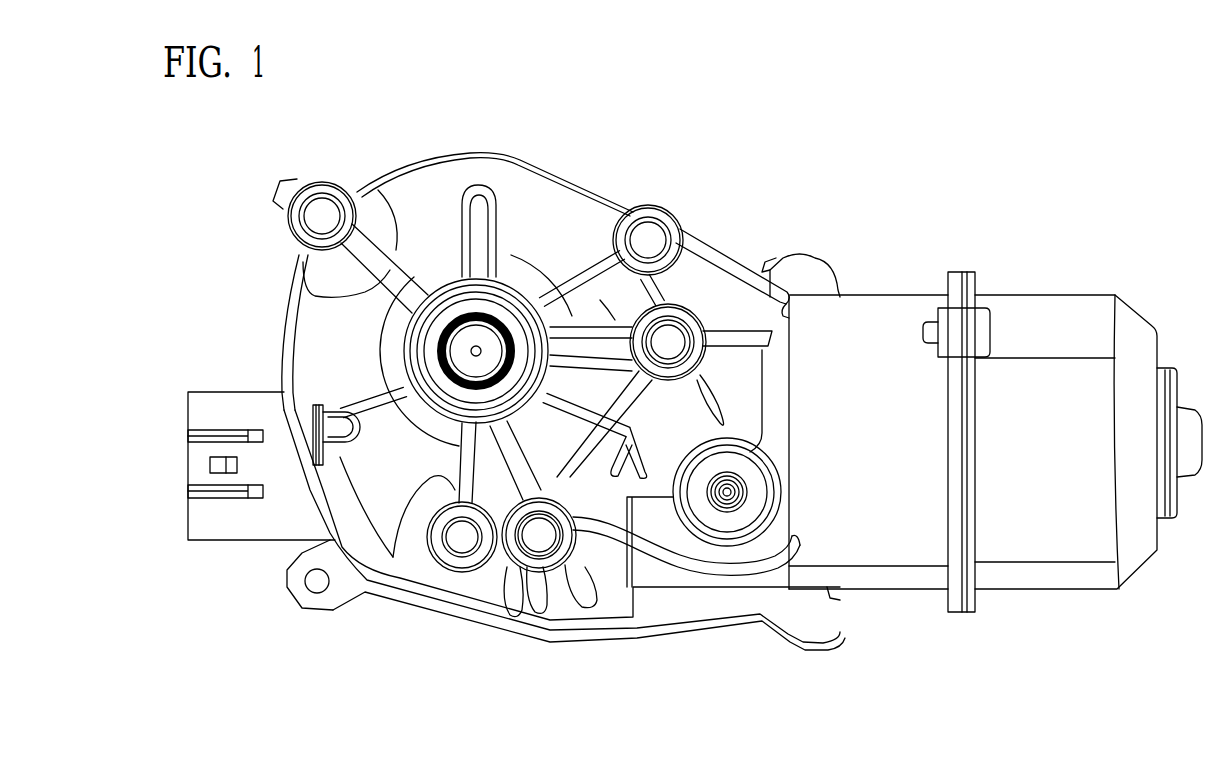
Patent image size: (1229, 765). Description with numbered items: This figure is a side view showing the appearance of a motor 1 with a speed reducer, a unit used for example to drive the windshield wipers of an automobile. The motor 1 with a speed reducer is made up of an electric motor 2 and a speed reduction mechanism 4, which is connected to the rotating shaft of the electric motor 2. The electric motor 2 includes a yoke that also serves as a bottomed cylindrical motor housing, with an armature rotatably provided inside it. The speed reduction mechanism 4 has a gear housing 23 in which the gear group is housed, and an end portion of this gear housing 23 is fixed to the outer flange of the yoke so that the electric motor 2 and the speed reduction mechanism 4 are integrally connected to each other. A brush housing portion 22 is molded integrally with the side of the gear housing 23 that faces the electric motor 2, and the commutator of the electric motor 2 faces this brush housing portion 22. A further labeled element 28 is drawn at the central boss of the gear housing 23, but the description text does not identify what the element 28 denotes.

The motor with a speed reducer 1 is at (873, 212).
The electric motor 2 is at (1043, 288).
The speed reduction mechanism 4 is at (596, 176).
The brush housing portion 22 is at (900, 556).
The gear housing 23 is at (547, 165).
The output shaft hub 28 is at (467, 337).